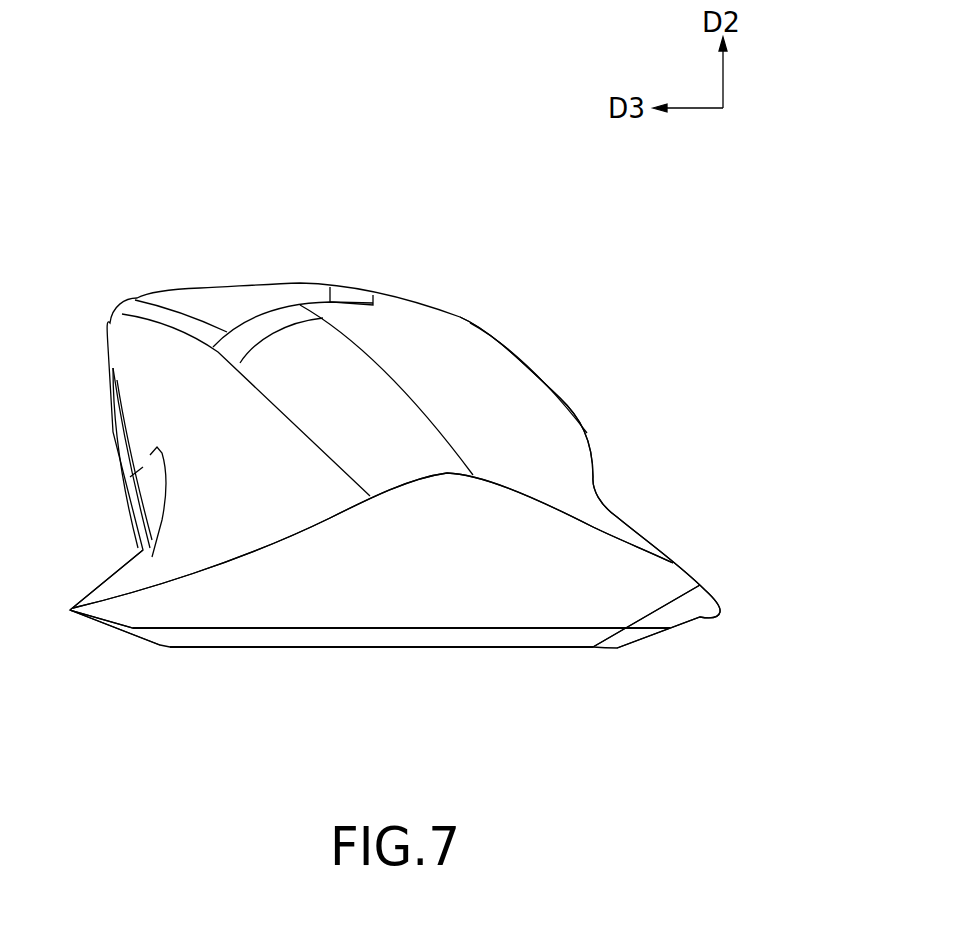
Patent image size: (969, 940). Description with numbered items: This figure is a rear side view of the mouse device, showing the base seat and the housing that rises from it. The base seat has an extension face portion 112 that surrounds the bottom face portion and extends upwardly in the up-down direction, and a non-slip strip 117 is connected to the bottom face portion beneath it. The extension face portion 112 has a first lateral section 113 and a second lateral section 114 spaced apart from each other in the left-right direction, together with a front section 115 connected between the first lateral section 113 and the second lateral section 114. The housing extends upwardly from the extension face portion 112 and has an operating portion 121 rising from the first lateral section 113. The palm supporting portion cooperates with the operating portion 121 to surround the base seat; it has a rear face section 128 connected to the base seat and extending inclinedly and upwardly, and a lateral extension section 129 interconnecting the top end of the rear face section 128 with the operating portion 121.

The first lateral section 113 is at (110, 628).
The operating portion 121 is at (237, 500).
The non-slip strip 117 is at (317, 647).
The front section 115 is at (398, 628).
The extension face portion 112 is at (473, 633).
The rear face section 128 is at (527, 577).
The second lateral section 114 is at (672, 630).
The lateral extension section 129 is at (573, 483).